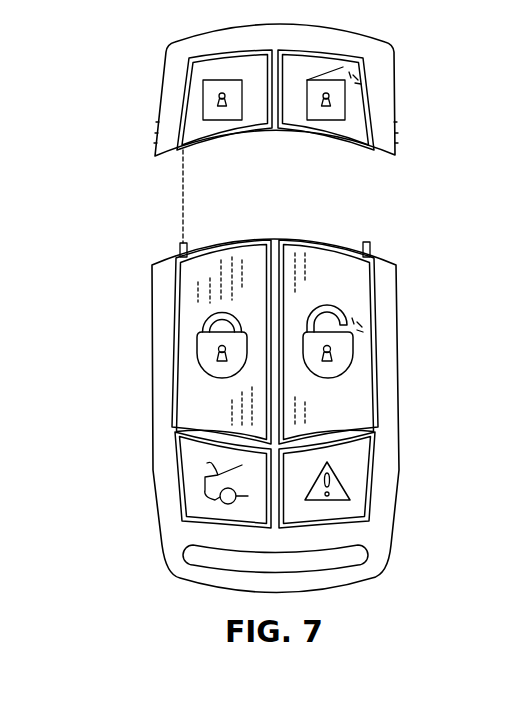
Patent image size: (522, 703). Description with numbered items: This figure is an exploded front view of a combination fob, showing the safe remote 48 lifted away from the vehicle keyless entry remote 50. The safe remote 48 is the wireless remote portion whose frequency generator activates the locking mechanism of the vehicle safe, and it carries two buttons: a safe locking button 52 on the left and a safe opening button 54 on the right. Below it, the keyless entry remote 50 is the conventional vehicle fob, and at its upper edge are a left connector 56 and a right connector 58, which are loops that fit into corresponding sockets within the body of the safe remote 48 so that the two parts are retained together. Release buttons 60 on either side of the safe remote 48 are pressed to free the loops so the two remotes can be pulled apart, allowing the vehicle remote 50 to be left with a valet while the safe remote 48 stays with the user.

The safe remote 48 is at (139, 75).
The keyless entry remote 50 is at (127, 300).
The safe locking button 52 is at (213, 120).
The safe opening button 54 is at (322, 120).
The left connector 56 is at (181, 248).
The right connector 58 is at (370, 248).
The release buttons 60 is at (396, 120).